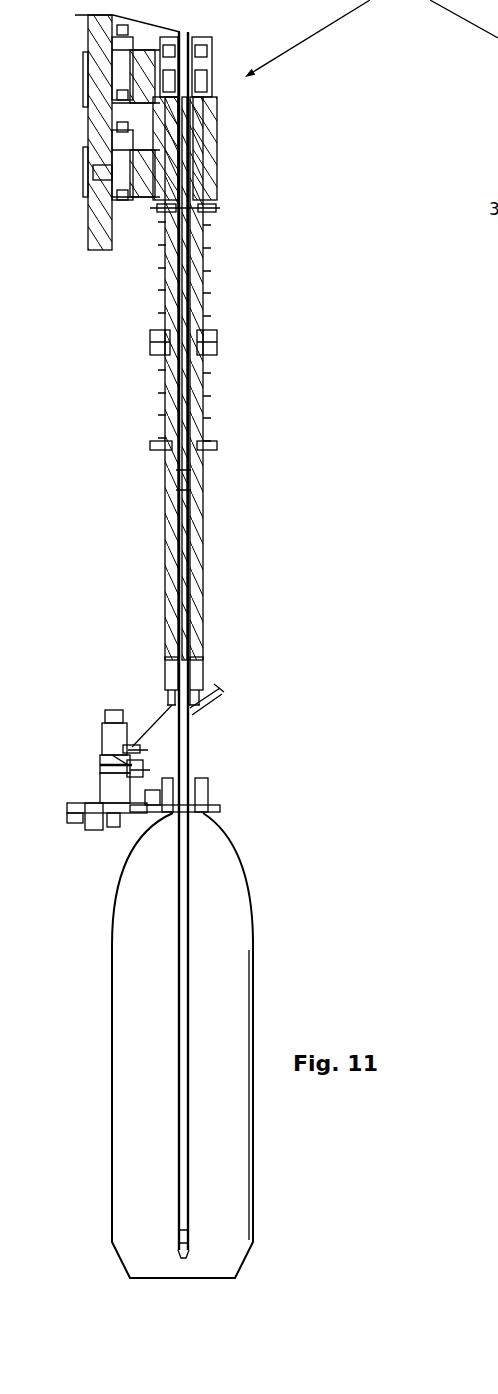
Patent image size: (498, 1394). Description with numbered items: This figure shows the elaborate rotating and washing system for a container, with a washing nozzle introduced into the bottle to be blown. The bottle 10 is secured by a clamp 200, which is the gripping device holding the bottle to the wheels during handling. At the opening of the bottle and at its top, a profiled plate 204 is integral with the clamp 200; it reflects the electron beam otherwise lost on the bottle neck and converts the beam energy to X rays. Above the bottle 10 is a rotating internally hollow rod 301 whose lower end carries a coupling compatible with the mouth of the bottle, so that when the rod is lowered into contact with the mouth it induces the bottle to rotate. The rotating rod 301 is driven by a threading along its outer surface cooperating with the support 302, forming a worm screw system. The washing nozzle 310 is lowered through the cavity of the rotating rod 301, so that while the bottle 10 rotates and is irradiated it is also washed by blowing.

The support 302 is at (224, 151).
The rotating internally hollow rod 301 is at (214, 581).
The profiled plate 204 is at (222, 712).
The clamp 200 is at (85, 756).
The bottle 10 is at (497, 1013).
The washing nozzle 310 is at (202, 1018).